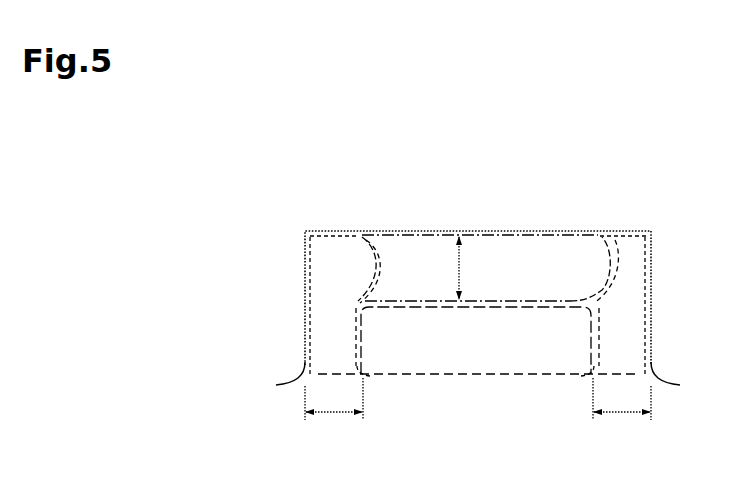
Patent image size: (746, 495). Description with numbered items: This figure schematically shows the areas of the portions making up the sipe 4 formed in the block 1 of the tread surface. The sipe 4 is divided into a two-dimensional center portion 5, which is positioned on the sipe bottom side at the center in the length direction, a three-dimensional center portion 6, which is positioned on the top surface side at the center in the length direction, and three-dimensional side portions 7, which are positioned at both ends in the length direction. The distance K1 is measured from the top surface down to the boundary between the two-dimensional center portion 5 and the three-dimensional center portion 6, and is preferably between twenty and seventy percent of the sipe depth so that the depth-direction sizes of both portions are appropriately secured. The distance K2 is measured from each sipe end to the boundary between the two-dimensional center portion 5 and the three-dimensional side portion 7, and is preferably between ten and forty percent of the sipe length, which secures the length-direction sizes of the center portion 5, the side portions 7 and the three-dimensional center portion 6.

The block 1 is at (357, 232).
The sipe 4 is at (428, 273).
The 2D center portion 5 is at (525, 342).
The 3D center portion 6 is at (545, 253).
The 3D side portion 7 is at (330, 300).
The distance K1 is at (474, 268).
The distance K2 is at (478, 410).